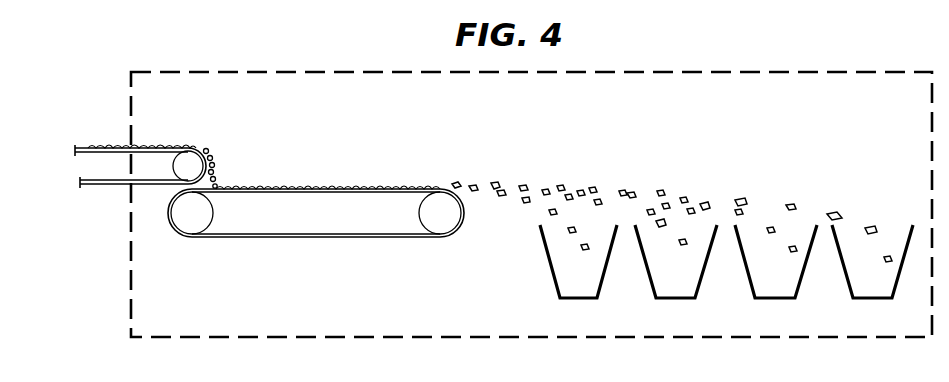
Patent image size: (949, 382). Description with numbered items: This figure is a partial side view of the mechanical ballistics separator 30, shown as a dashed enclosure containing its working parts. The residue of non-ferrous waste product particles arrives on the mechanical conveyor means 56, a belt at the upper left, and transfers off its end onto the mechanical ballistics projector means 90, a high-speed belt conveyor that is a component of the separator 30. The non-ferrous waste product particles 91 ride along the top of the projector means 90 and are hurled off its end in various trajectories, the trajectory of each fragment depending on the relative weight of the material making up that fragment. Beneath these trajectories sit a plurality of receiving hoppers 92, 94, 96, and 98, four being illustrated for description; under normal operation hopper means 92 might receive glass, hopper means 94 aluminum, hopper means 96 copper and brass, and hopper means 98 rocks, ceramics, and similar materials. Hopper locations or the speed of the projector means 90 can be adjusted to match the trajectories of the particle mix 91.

The mechanical ballistics separator 30 is at (670, 72).
The mechanical conveyor means 56 is at (110, 143).
The mechanical ballistics projector means 90 is at (297, 187).
The non-ferrous waste product particles 91 is at (370, 187).
The receiving hopper 92 is at (580, 300).
The receiving hopper 94 is at (682, 300).
The receiving hopper 96 is at (778, 300).
The receiving hopper 98 is at (877, 300).